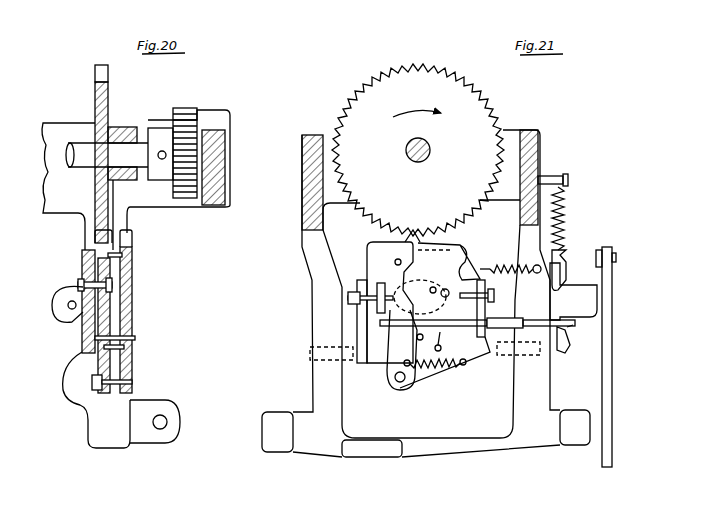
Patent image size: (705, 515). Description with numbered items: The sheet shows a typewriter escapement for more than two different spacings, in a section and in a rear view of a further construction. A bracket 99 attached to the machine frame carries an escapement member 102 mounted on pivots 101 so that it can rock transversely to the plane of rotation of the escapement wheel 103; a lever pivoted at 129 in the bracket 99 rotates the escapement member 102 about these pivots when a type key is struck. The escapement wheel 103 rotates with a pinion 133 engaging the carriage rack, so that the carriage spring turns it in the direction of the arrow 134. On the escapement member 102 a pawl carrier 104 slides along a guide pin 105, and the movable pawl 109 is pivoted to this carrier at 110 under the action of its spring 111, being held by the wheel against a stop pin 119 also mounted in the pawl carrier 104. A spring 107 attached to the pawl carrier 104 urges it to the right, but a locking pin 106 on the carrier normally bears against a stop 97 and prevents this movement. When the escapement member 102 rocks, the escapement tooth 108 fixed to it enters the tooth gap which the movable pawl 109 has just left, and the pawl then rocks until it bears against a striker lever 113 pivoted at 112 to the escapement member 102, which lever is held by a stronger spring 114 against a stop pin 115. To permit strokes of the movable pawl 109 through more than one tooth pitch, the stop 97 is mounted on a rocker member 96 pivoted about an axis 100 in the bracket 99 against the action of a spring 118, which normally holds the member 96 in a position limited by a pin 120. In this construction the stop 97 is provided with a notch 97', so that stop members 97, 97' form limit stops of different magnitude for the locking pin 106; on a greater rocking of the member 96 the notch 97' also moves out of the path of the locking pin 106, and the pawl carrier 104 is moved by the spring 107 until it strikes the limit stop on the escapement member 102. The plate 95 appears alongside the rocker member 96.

In FIG. 21, the plate 95 is at (612, 363).
In FIG. 21, the rocker member 96 is at (606, 322).
In FIG. 21, the stop 97 is at (572, 353).
In FIG. 21, the stop notch 97' is at (582, 335).
In FIG. 20, the bracket 99 is at (63, 130).
In FIG. 21, the bracket 99 is at (525, 442).
In FIG. 21, the axis 100 is at (578, 291).
In FIG. 20, the pivots 101 is at (124, 350).
In FIG. 21, the pivots 101 is at (312, 358).
In FIG. 20, the escapement member 102 is at (133, 317).
In FIG. 21, the escapement member 102 is at (467, 373).
In FIG. 20, the escapement wheel 103 is at (108, 98).
In FIG. 21, the escapement wheel 103 is at (386, 72).
In FIG. 20, the pawl carrier 104 is at (88, 326).
In FIG. 21, the pawl carrier 104 is at (388, 317).
In FIG. 20, the guide pin 105 is at (64, 305).
In FIG. 21, the guide pin 105 is at (390, 293).
In FIG. 21, the locking pin 106 is at (537, 319).
In FIG. 21, the spring 107 is at (505, 267).
In FIG. 20, the escapement tooth 108 is at (133, 238).
In FIG. 21, the escapement tooth 108 is at (414, 235).
In FIG. 20, the movable pawl 109 is at (96, 238).
In FIG. 21, the movable pawl 109 is at (450, 243).
In FIG. 20, the pivot 110 is at (80, 284).
In FIG. 21, the pivot 110 is at (436, 286).
In FIG. 21, the spring 111 is at (452, 336).
In FIG. 20, the pivot 112 is at (122, 384).
In FIG. 21, the pivot 112 is at (400, 383).
In FIG. 20, the striker lever 113 is at (98, 390).
In FIG. 21, the striker lever 113 is at (392, 372).
In FIG. 21, the spring 114 is at (435, 370).
In FIG. 20, the stop pin 115 is at (128, 338).
In FIG. 21, the spring 118 is at (566, 208).
In FIG. 20, the stop pin 119 is at (128, 257).
In FIG. 21, the stop pin 119 is at (394, 261).
In FIG. 21, the pin 120 is at (566, 260).
In FIG. 20, the pivot 129 is at (167, 421).
In FIG. 20, the pinion 133 is at (184, 108).
In FIG. 21, the arrow 134 is at (417, 102).